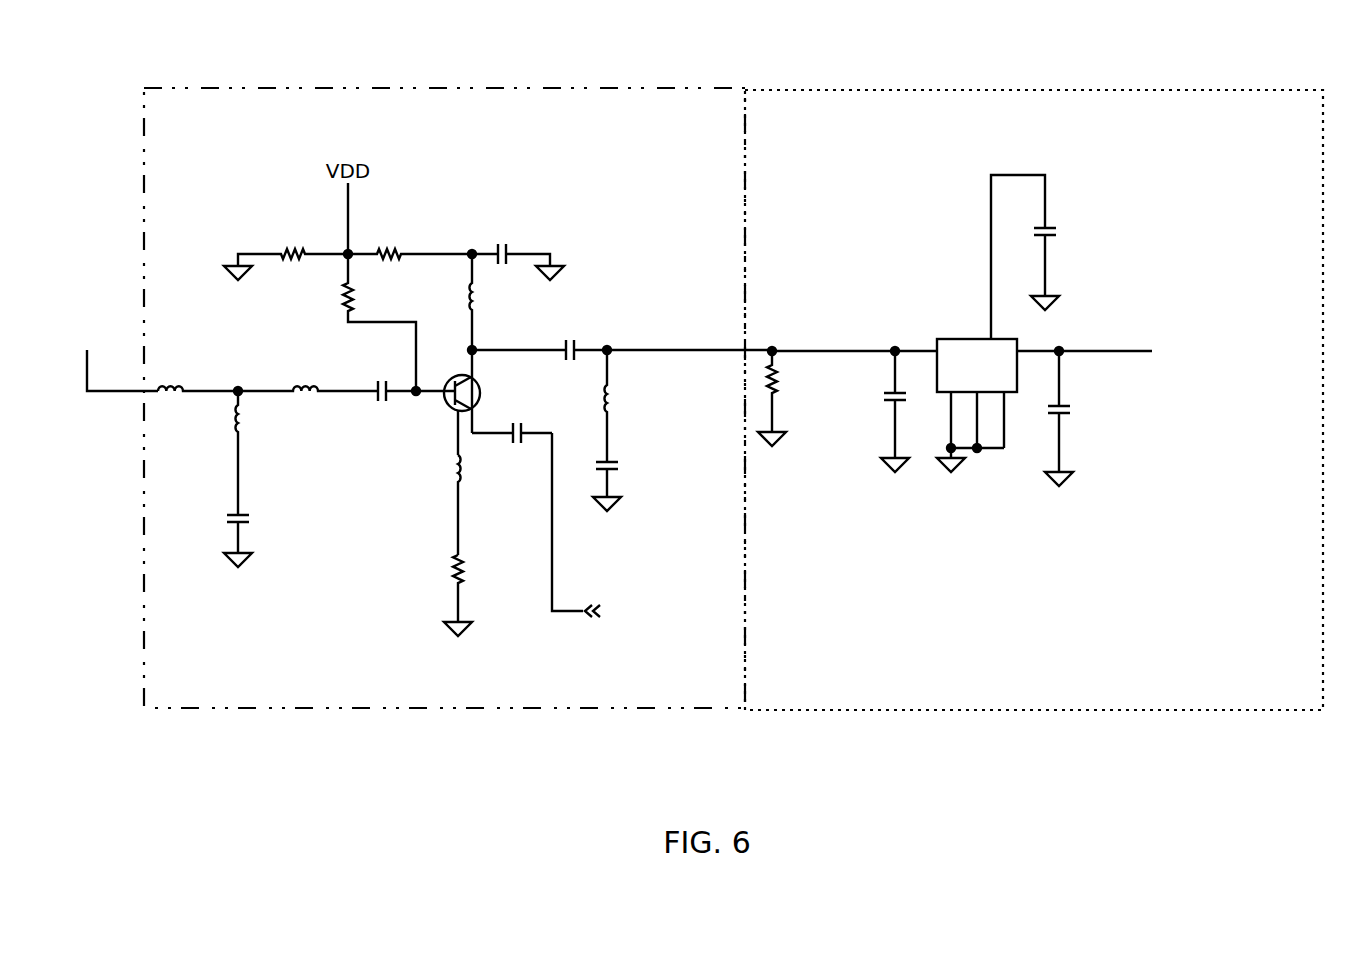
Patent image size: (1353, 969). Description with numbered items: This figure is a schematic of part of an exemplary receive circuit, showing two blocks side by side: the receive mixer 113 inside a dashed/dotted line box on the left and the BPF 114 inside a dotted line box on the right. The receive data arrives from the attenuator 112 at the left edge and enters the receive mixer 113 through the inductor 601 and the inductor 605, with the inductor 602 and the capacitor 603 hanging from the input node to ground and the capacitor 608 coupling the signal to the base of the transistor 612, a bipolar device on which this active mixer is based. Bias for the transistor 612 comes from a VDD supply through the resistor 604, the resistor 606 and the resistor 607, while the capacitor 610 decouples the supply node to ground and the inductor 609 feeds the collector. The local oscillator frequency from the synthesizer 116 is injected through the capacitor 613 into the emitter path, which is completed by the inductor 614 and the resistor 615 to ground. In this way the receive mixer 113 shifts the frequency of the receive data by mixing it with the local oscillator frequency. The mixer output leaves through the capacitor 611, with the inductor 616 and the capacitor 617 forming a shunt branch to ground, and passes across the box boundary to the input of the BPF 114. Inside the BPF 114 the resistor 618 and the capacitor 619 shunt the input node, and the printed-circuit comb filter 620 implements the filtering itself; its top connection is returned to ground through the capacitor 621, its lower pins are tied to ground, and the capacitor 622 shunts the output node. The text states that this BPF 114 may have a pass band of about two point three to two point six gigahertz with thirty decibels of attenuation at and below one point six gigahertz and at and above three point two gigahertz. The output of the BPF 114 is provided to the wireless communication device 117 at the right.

The attenuator 112 is at (98, 316).
The receive mixer 113 is at (444, 373).
The BPF 114 is at (1034, 374).
The synthesizer 116 is at (636, 562).
The wireless communication device 117 is at (1183, 401).
The inductor 601 is at (198, 370).
The inductor 602 is at (214, 453).
The capacitor 603 is at (257, 529).
The resistor 604 is at (286, 250).
The inductor 605 is at (308, 372).
The resistor 606 is at (358, 322).
The resistor 607 is at (410, 242).
The capacitor 608 is at (386, 405).
The inductor 609 is at (445, 302).
The capacitor 610 is at (518, 246).
The inductor 611 is at (539, 334).
The transistor 612 is at (467, 402).
The capacitor 613 is at (519, 423).
The inductor 614 is at (482, 505).
The resistor 615 is at (475, 595).
The inductor 616 is at (628, 406).
The capacitor 617 is at (630, 482).
The resistor 618 is at (791, 398).
The capacitor 619 is at (875, 411).
The printed-circuit comb filter 620 is at (977, 405).
The capacitor 621 is at (1052, 257).
The capacitor 622 is at (1085, 418).